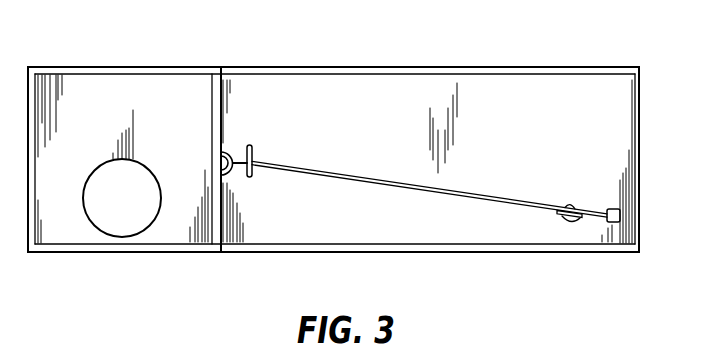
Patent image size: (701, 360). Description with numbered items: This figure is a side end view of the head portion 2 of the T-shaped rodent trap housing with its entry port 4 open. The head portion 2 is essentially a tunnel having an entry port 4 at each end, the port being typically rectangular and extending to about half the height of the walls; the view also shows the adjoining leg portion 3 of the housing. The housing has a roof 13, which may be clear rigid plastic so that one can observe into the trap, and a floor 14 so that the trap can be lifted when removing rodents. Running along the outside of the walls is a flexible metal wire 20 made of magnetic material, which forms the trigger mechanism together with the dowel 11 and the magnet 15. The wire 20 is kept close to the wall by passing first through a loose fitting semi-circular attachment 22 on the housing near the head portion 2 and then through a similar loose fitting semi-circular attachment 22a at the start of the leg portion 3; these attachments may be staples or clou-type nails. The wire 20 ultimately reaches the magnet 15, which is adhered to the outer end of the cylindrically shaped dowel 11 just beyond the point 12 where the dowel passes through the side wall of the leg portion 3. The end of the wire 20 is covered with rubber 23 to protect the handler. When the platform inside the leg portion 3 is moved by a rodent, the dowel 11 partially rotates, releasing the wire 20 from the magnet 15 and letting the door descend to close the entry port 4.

The head portion 2 is at (119, 67).
The leg portion 3 is at (519, 67).
The entry port 4 is at (117, 221).
The dowel 11 is at (580, 222).
The point 12 is at (568, 221).
The roof 13 is at (361, 67).
The floor 14 is at (348, 254).
The magnet 15 is at (558, 214).
The flexible metal wire 20 is at (218, 162).
The semi-circular attachment 22 is at (237, 177).
The semi-circular attachment 22a is at (249, 145).
The rubber 23 is at (621, 216).